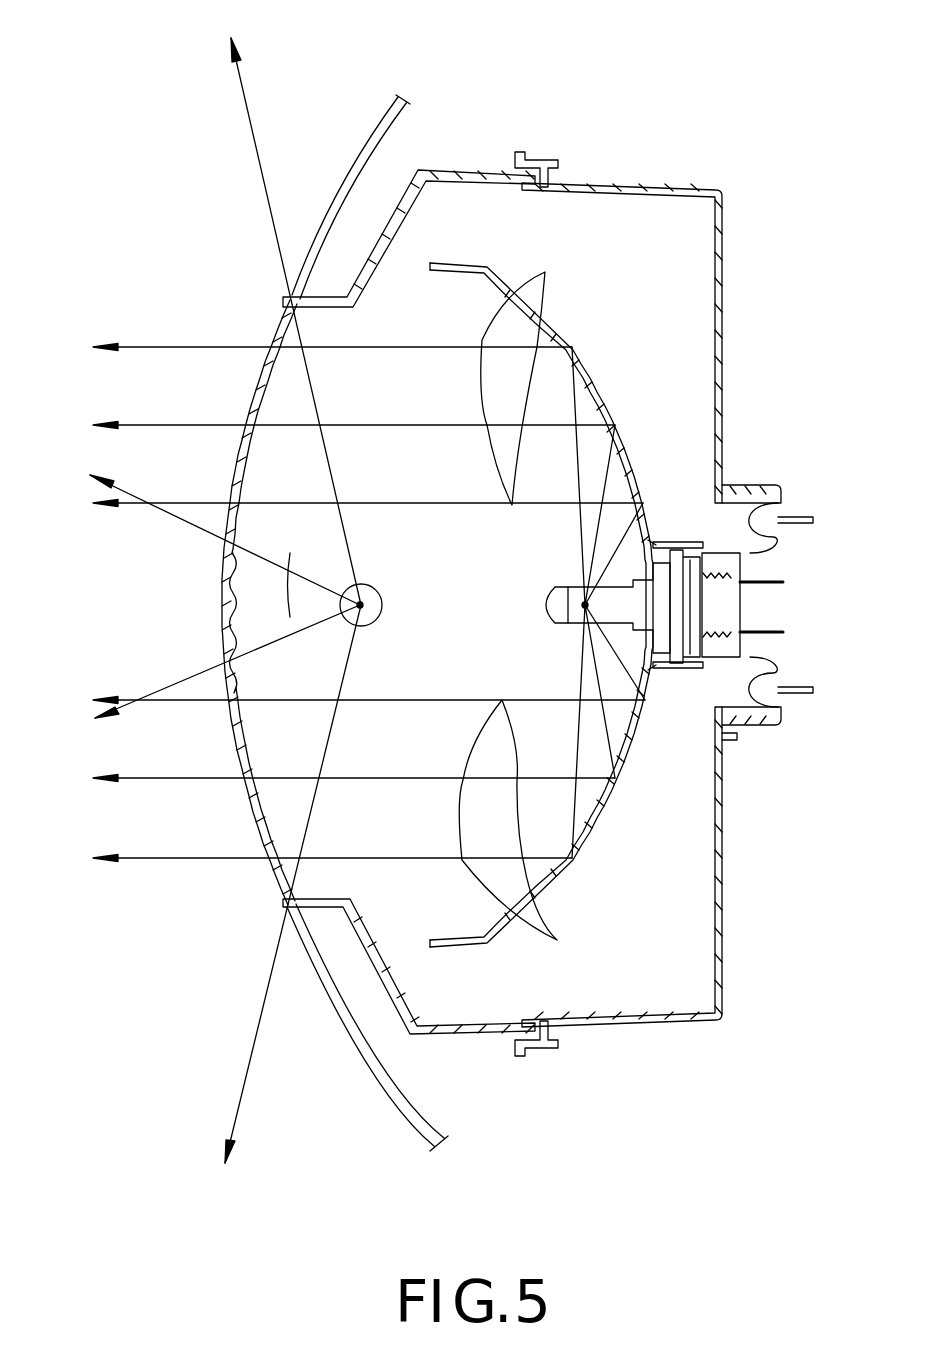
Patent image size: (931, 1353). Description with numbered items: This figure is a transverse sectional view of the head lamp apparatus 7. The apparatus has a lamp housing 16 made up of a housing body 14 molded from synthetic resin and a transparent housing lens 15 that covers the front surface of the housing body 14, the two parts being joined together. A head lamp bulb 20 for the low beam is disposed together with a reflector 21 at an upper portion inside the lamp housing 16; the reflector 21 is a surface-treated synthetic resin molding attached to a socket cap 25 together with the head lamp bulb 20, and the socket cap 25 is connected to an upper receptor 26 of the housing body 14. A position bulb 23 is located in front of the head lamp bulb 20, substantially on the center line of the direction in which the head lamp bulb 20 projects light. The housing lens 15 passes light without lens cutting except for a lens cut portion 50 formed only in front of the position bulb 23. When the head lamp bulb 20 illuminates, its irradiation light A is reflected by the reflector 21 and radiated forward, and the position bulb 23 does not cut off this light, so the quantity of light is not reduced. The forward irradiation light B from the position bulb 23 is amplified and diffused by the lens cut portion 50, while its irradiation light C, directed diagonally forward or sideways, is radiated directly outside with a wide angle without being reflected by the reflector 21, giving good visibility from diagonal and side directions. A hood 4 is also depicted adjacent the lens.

The lamp housing 16 is at (615, 45).
The housing lens 15 is at (487, 170).
The housing body 14 is at (610, 182).
The hood / shroud 4 is at (335, 195).
The reflector 21 is at (603, 387).
The socket cap 25 is at (753, 488).
The upper receptor 26 is at (762, 553).
The head lamp bulb 20 is at (547, 603).
The position bulb 23 is at (377, 587).
The lens cut portion 50 is at (240, 607).
The head lamp apparatus 7 is at (157, 590).
The irradiation light A is at (516, 609).
The forward irradiation light B is at (258, 573).
The irradiation light C is at (265, 207).